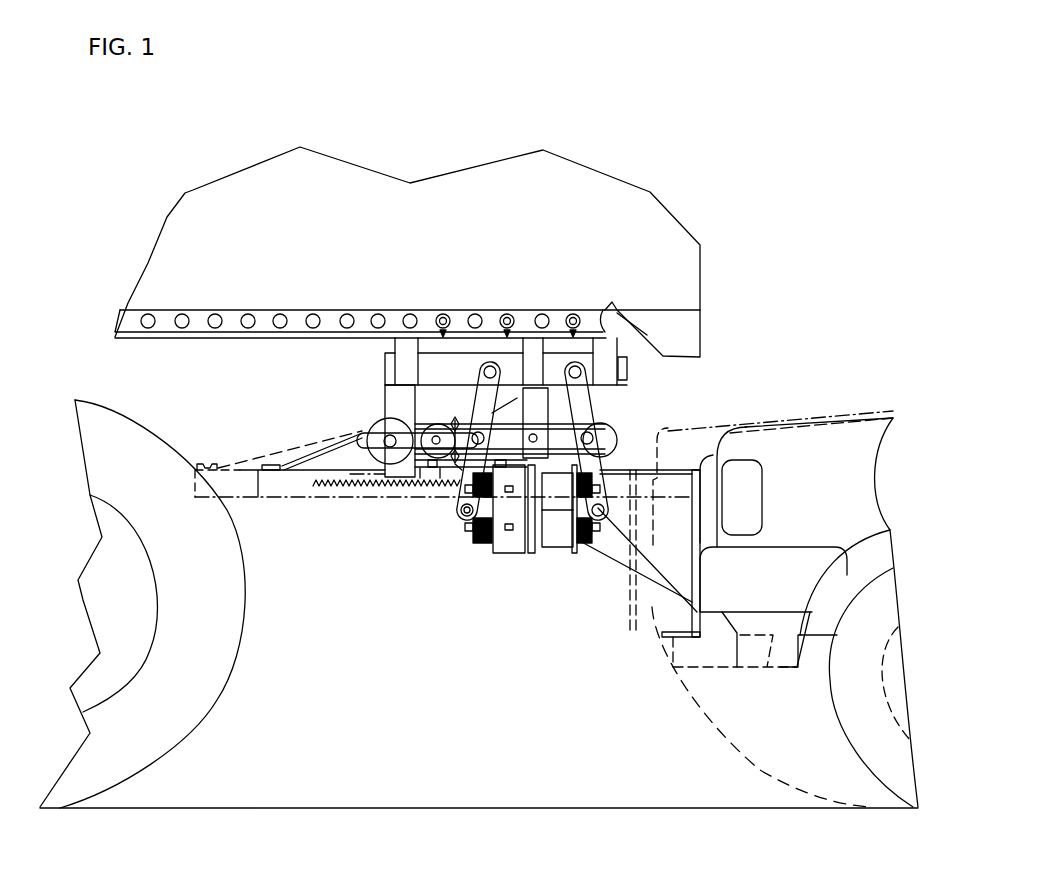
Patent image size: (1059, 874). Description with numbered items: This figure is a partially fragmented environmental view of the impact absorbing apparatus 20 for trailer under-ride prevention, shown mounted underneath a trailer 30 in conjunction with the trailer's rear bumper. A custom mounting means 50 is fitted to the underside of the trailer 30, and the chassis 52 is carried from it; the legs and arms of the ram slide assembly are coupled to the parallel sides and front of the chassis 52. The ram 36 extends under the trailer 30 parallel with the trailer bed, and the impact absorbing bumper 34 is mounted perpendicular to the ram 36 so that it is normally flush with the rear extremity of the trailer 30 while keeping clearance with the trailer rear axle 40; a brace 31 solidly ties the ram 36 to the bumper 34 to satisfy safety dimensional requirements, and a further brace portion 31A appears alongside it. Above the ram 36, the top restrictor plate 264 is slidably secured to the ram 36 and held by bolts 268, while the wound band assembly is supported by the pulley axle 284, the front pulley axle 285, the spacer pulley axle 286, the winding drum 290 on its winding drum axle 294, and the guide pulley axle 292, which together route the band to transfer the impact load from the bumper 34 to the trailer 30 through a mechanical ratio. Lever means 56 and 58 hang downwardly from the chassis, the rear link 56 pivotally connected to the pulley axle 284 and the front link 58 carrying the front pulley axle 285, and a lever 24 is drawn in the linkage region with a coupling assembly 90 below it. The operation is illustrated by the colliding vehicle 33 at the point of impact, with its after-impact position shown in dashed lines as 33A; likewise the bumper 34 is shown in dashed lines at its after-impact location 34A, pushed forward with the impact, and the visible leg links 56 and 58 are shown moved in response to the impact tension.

The impact absorbing apparatus 20 is at (465, 666).
The actuating lever 24 is at (360, 443).
The trailer 30 is at (720, 317).
The brace 31 is at (680, 607).
The bracket brace 31A is at (578, 590).
The colliding vehicle 33 is at (817, 440).
The colliding vehicle after impact 33A is at (712, 414).
The impact absorbing bumper 34 is at (722, 454).
The bumper after impact location 34A is at (637, 582).
The ram 36 is at (292, 488).
The trailer rear axle 40 is at (250, 650).
The custom mounting means 50 is at (378, 352).
The chassis 52 is at (470, 355).
The lever means 56 is at (593, 410).
The lever means 58 is at (468, 518).
The coupling assembly 90 is at (602, 552).
The top restrictor plate 264 is at (458, 472).
The bolts 268 is at (427, 470).
The pulley axle 284 is at (606, 440).
The front pulley axle 285 is at (472, 380).
The spacer pulley axle 286 is at (533, 432).
The winding drum 290 is at (436, 446).
The guide pulley axle 292 is at (383, 428).
The winding drum axle 294 is at (452, 464).